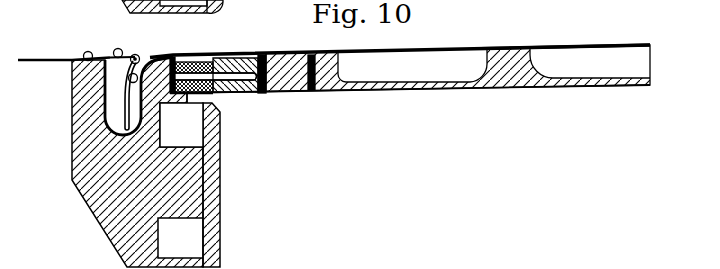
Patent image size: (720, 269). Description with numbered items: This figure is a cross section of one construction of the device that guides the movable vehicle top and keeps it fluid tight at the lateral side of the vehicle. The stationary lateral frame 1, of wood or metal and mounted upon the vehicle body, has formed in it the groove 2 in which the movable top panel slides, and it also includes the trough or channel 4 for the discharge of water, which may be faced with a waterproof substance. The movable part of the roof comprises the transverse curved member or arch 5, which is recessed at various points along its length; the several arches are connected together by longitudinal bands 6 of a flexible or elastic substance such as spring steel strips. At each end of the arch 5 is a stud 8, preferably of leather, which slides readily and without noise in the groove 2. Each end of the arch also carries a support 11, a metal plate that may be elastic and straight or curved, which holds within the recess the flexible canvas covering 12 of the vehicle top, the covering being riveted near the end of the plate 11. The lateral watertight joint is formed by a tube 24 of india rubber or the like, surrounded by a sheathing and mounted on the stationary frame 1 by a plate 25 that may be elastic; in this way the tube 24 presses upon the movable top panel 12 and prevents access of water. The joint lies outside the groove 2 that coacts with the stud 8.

The lateral frame 1 is at (87, 82).
The groove 2 is at (164, 104).
The trough or channel 4 is at (78, 153).
The curved member or arch 5 is at (422, 84).
The longitudinal band 6 is at (512, 47).
The stud 8 is at (211, 108).
The support 11 is at (238, 92).
The covering 12 is at (215, 52).
The tube 24 is at (139, 57).
The plate 25 is at (107, 55).